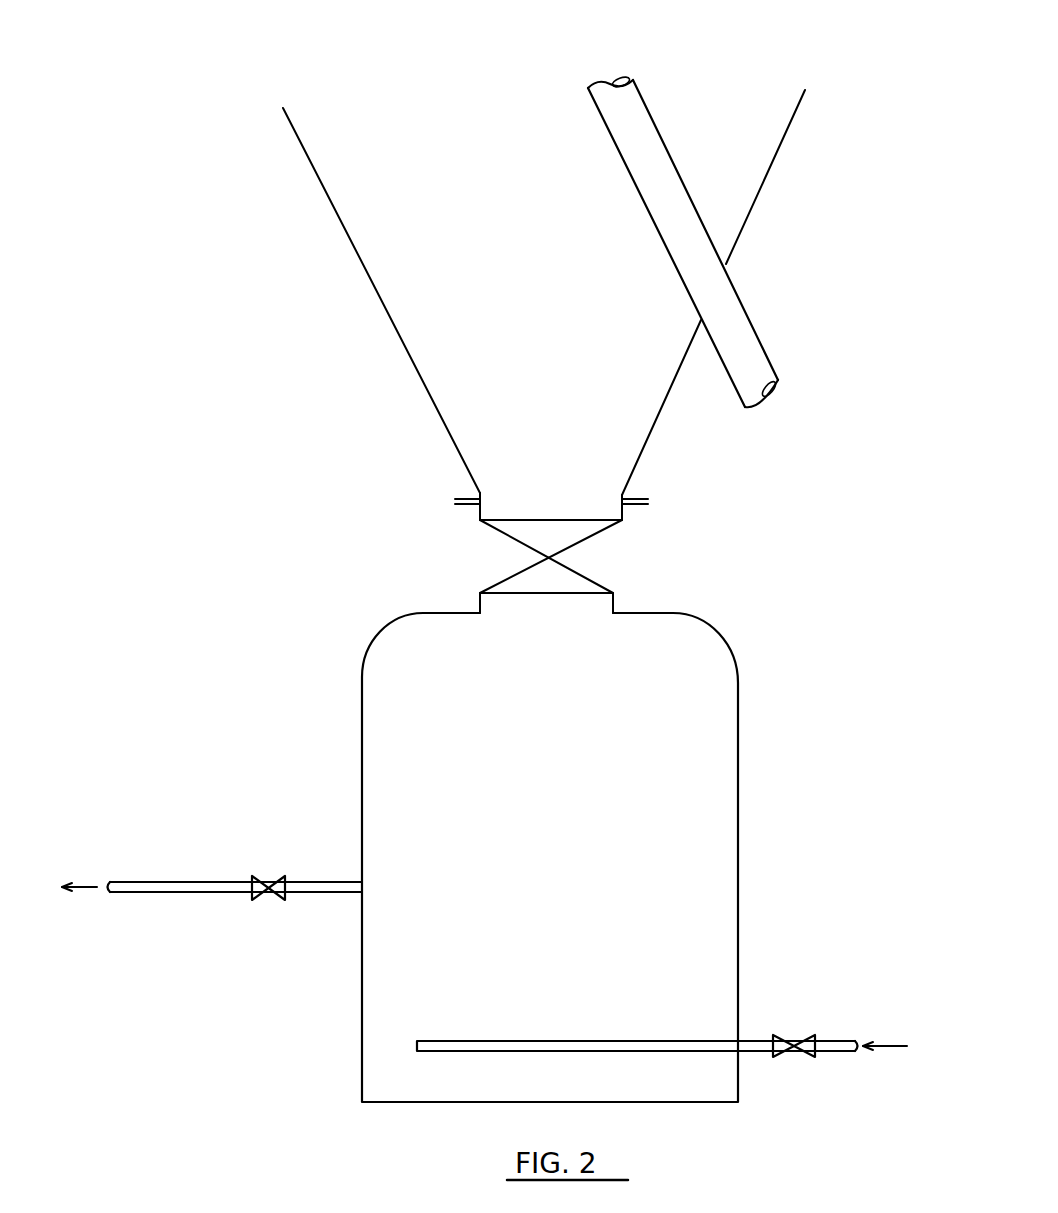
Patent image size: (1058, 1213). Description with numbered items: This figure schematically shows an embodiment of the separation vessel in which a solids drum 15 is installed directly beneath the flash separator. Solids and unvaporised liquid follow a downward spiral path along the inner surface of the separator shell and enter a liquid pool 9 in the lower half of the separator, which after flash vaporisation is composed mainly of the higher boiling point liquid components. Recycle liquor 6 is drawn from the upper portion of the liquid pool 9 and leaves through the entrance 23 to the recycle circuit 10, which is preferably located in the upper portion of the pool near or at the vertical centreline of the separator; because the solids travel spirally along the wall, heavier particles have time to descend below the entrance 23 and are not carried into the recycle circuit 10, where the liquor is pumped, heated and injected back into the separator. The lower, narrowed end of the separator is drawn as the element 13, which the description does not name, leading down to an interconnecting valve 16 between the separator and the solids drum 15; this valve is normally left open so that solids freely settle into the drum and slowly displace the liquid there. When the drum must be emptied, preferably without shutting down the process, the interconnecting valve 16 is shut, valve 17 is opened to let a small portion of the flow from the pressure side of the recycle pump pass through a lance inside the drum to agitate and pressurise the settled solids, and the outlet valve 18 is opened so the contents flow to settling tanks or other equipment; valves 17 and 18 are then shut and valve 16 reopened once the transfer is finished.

The recycle liquor 6 is at (568, 10).
The liquid pool 9 is at (413, 268).
The recycle circuit 10 is at (765, 348).
The hopper outlet neck 13 is at (628, 482).
The solids drum 15 is at (738, 882).
The interconnecting valve 16 is at (562, 557).
The valve 17 is at (797, 1042).
The outlet valve 18 is at (268, 883).
The entrance to the recycle circuit 23 is at (633, 80).